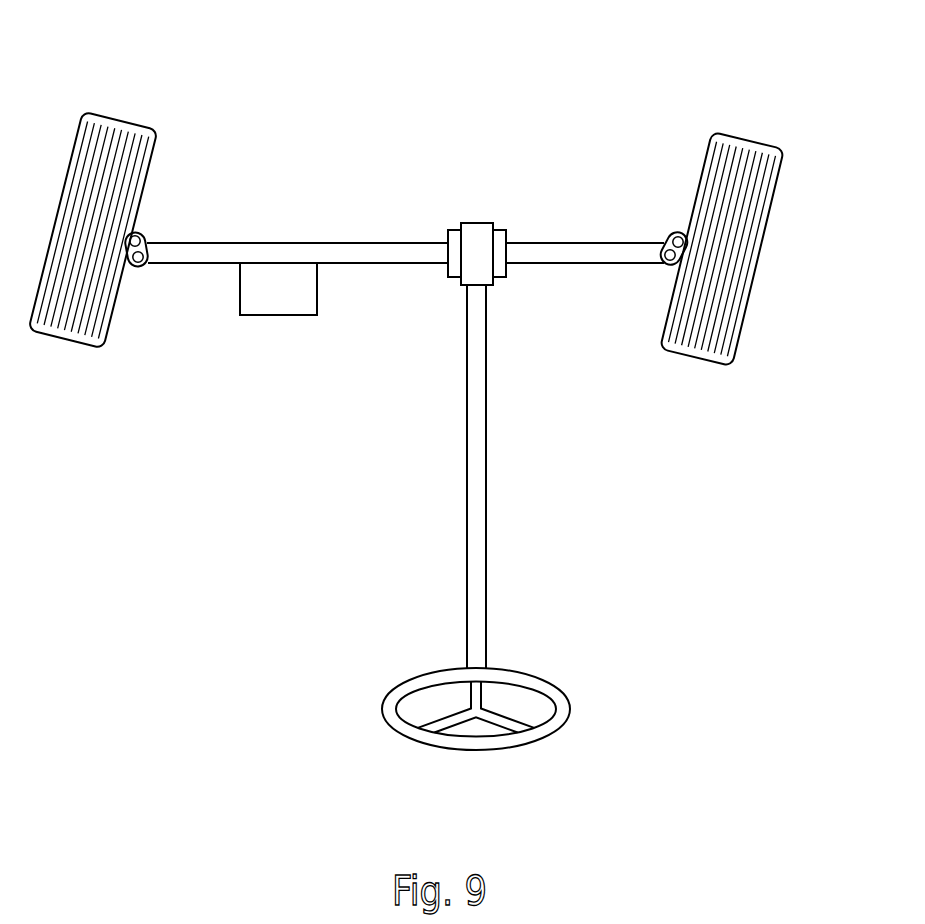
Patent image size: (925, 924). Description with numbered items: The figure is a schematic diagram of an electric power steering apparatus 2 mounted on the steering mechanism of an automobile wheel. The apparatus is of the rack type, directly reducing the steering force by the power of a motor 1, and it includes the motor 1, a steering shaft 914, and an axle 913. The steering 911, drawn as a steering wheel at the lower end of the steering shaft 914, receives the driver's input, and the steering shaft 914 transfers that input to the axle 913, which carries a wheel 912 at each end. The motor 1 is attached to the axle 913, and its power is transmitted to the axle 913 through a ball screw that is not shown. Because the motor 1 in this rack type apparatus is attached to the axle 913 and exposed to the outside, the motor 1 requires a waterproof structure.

The electric power steering apparatus 2 is at (631, 112).
The motor 1 is at (278, 315).
The steering 911 is at (465, 742).
The wheel 912 is at (75, 315).
The axle 913 is at (540, 253).
The steering shaft 914 is at (475, 597).